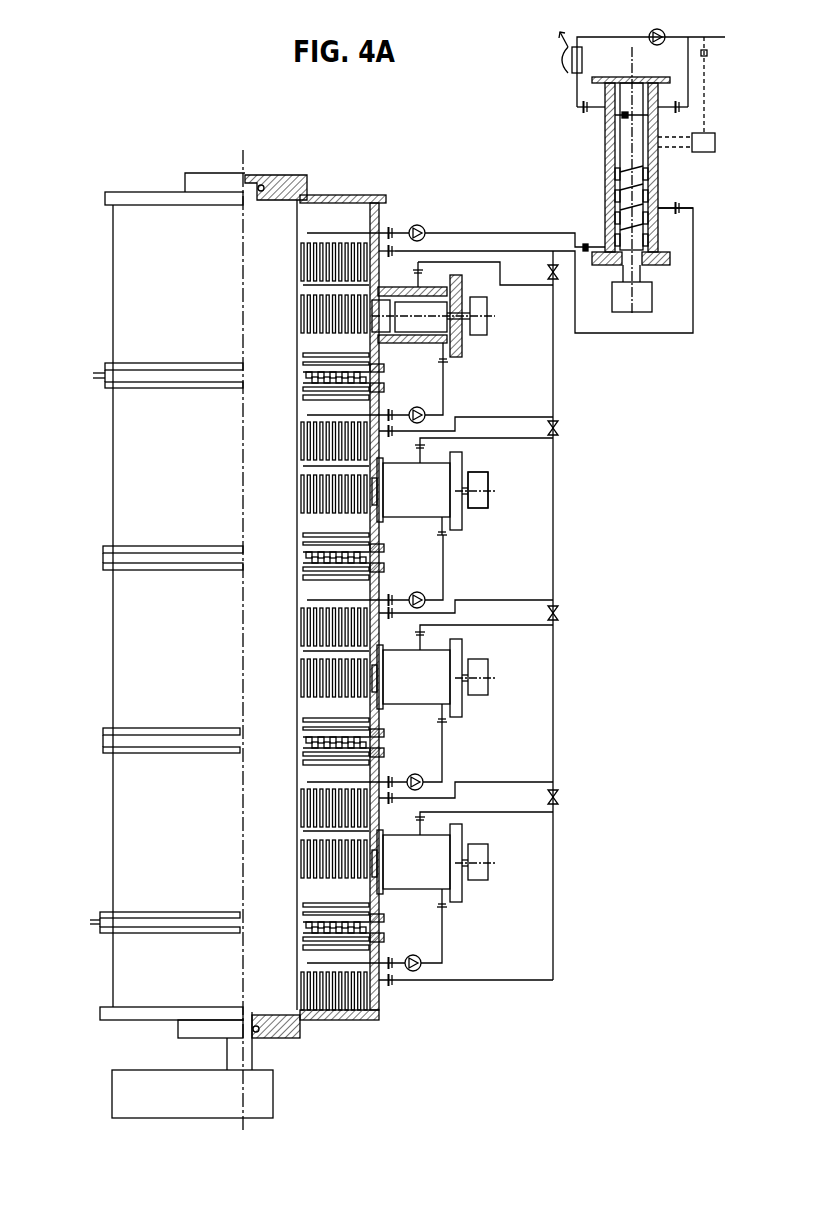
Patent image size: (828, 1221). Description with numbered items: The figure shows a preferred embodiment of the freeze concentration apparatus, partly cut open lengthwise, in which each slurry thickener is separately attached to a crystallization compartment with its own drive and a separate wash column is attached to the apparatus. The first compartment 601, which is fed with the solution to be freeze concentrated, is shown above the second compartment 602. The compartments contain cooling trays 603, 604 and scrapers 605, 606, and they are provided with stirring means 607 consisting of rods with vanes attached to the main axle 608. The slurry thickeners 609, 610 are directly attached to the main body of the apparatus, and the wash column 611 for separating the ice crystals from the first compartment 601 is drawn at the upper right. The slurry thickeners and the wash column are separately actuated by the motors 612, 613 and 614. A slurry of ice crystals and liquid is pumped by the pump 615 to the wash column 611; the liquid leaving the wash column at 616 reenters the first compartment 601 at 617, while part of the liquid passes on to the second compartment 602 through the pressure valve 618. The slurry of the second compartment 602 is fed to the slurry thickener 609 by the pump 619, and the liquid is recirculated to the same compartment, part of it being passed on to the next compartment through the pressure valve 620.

The first compartment 601 is at (322, 213).
The second compartment 602 is at (152, 462).
The cooling tray 603 is at (145, 378).
The cooling tray 604 is at (148, 557).
The scraper 605 is at (362, 370).
The scraper 606 is at (377, 547).
The stirring means 607 is at (352, 245).
The main axle 608 is at (257, 248).
The slurry thickener 609 is at (462, 351).
The slurry thickener 610 is at (463, 523).
The wash column 611 is at (605, 145).
The motor 612 is at (488, 501).
The motor 613 is at (477, 325).
The motor 614 is at (643, 295).
The pump 615 is at (422, 227).
The wash column liquid outlet 616 is at (672, 203).
The compartment liquid inlet 617 is at (386, 246).
The pressure valve 618 is at (552, 266).
The pump 619 is at (424, 410).
The pressure valve 620 is at (558, 429).